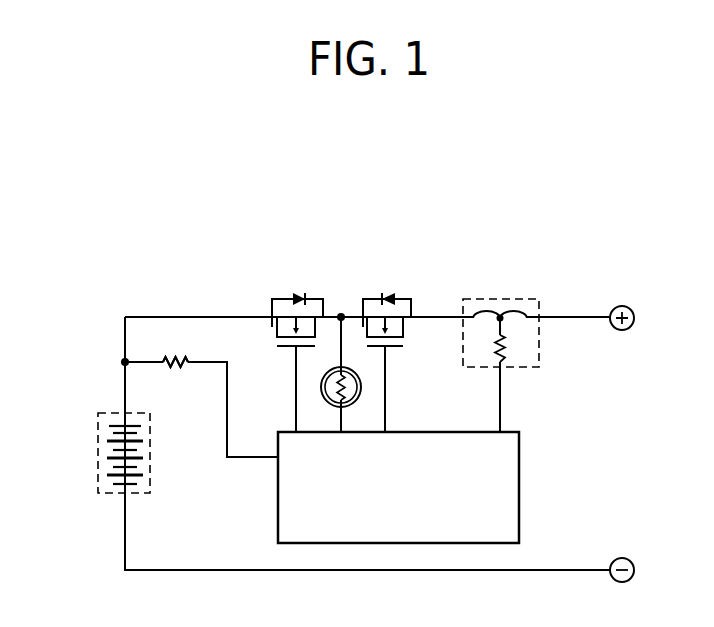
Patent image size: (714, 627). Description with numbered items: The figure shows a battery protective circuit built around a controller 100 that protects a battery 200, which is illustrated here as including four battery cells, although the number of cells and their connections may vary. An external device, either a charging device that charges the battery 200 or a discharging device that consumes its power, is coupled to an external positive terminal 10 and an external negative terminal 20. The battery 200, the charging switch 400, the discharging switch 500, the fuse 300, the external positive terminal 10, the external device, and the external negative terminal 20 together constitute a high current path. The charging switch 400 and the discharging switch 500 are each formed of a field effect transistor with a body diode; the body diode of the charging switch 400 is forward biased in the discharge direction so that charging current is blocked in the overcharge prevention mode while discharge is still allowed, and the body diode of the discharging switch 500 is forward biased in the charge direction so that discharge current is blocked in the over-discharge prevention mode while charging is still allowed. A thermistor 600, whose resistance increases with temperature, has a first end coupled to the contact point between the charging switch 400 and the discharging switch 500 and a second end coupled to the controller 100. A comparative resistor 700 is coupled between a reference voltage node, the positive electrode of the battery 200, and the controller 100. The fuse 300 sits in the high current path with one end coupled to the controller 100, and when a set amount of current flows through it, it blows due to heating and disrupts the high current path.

The external positive terminal 10 is at (622, 306).
The external negative terminal 20 is at (622, 558).
The controller 100 is at (519, 490).
The battery 200 is at (99, 451).
The fuse 300 is at (500, 298).
The charging switch 400 is at (272, 327).
The discharging switch 500 is at (363, 327).
The thermistor 600 is at (361, 383).
The comparative resistor 700 is at (176, 366).